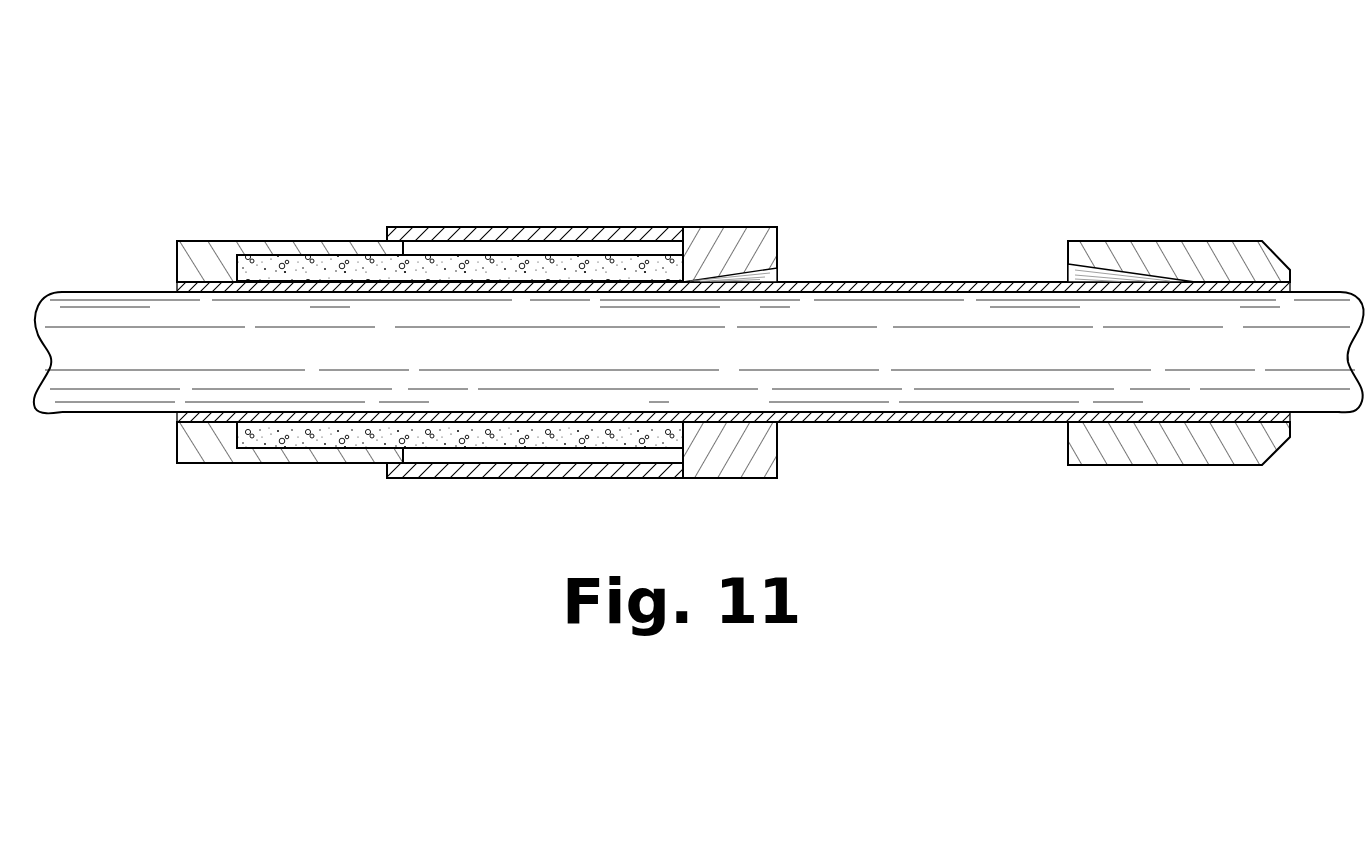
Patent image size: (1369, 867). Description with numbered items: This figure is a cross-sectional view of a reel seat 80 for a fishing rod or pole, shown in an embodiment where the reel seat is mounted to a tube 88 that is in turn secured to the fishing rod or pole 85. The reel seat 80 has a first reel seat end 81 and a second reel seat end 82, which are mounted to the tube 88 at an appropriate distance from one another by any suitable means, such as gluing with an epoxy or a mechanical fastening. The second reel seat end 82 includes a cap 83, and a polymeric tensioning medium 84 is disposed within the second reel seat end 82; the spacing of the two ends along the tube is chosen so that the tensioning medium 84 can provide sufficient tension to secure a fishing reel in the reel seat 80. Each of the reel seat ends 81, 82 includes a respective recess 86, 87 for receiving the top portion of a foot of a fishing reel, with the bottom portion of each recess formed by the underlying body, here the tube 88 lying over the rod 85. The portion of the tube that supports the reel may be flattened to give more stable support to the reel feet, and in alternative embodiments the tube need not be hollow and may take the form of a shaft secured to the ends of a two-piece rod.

The reel seat 80 is at (675, 66).
The first reel seat end 81 is at (1150, 465).
The second reel seat end 82 is at (777, 232).
The cap 83 is at (748, 478).
The polymeric tensioning medium 84 is at (460, 440).
The fishing rod or pole 85 is at (686, 362).
The recess 86 is at (1068, 272).
The recess 87 is at (777, 270).
The tube 88 is at (929, 282).